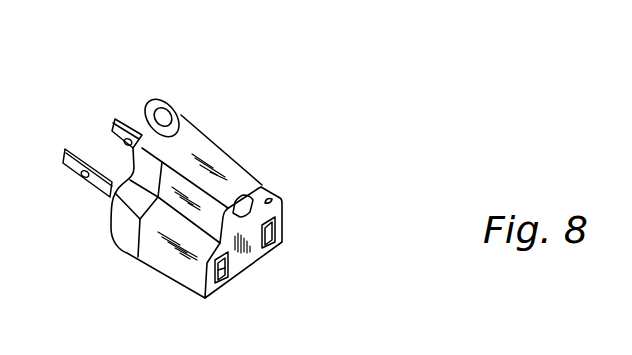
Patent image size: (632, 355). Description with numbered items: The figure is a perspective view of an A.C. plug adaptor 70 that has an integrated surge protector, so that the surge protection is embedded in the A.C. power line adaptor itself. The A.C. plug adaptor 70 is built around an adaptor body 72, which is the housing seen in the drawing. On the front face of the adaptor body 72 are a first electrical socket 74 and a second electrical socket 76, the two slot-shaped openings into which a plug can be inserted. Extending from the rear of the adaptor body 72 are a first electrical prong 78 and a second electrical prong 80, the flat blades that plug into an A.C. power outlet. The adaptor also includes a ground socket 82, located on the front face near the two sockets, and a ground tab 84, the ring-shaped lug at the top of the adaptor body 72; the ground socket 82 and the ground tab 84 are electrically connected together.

The A.C. plug adaptor 70 is at (297, 91).
The adaptor body 72 is at (175, 267).
The first electrical socket 74 is at (226, 270).
The second electrical socket 76 is at (273, 238).
The first electrical prong 78 is at (65, 170).
The second electrical prong 80 is at (112, 128).
The ground socket 82 is at (259, 192).
The ground tab 84 is at (172, 98).